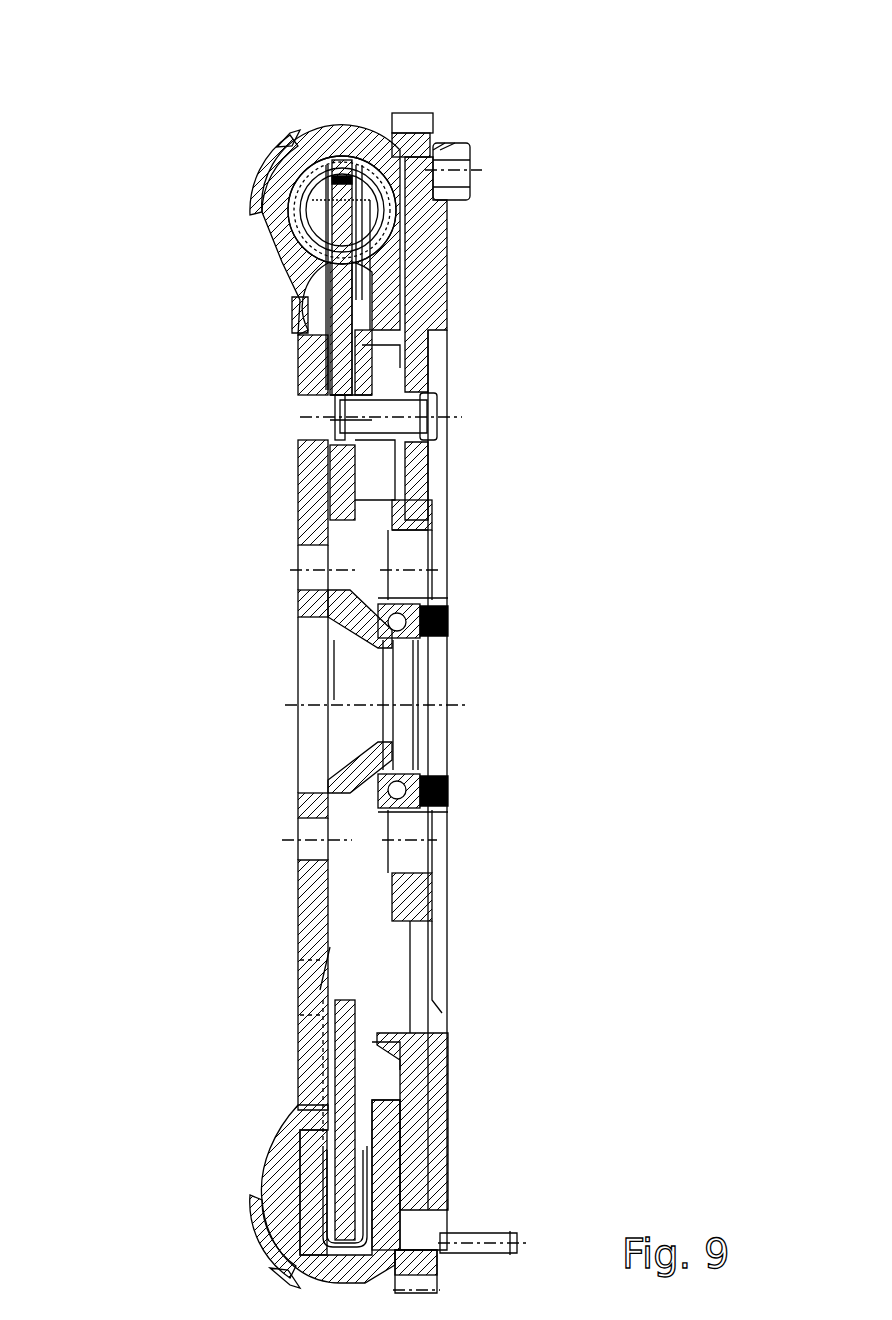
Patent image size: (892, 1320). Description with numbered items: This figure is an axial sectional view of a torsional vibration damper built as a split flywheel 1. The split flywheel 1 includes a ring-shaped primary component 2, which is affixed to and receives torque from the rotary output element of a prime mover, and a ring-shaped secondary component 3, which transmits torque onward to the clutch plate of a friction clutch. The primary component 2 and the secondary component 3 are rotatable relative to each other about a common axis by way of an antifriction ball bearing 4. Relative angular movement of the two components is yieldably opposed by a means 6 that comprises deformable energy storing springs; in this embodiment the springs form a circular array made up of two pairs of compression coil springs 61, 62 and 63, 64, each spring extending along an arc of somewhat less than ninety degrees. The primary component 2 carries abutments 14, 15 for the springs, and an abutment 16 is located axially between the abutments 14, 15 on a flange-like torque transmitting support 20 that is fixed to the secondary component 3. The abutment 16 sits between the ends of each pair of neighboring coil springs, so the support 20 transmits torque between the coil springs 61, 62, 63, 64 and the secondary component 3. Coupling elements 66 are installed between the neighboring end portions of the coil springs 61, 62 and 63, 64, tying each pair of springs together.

The split flywheel 1 is at (462, 118).
The primary component 2 is at (307, 503).
The secondary component 3 is at (420, 482).
The antifriction ball bearing 4 is at (438, 602).
The means for yieldably opposing angular movements 6 is at (292, 258).
The abutment 14 is at (309, 160).
The abutment 15 is at (370, 152).
The abutment 16 is at (339, 155).
The flange-like torque transmitting support 20 is at (338, 367).
The compression coil spring 61 is at (266, 218).
The compression coil spring 62 is at (288, 138).
The compression coil spring 63 is at (273, 1236).
The compression coil spring 64 is at (285, 1278).
The coupling element 66 is at (300, 338).